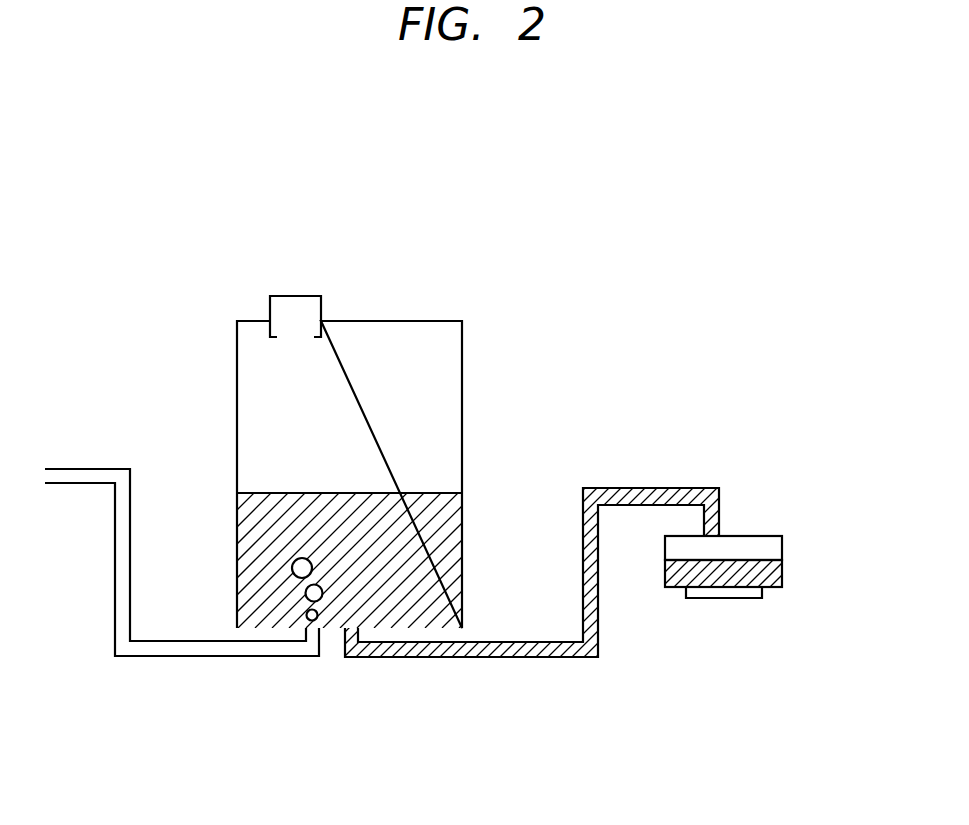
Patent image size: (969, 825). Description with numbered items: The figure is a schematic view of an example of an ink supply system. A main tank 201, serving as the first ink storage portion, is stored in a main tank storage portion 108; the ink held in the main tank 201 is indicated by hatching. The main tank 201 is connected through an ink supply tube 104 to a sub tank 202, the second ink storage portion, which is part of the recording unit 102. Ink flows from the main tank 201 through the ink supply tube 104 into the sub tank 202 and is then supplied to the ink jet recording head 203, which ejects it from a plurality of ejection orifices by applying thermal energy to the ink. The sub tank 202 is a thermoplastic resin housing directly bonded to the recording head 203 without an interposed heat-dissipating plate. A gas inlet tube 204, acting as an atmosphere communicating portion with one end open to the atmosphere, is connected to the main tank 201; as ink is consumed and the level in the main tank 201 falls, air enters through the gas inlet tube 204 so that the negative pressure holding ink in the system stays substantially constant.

The main tank storage portion 108 is at (482, 263).
The main tank 201 is at (422, 346).
The gas inlet tube 204 is at (85, 468).
The ink supply tube 104 is at (638, 487).
The recording unit 102 is at (755, 580).
The sub tank 202 is at (753, 548).
The ink jet recording head 203 is at (708, 593).